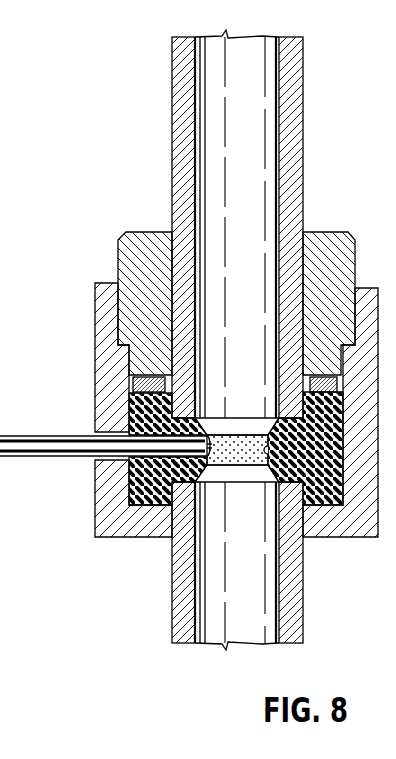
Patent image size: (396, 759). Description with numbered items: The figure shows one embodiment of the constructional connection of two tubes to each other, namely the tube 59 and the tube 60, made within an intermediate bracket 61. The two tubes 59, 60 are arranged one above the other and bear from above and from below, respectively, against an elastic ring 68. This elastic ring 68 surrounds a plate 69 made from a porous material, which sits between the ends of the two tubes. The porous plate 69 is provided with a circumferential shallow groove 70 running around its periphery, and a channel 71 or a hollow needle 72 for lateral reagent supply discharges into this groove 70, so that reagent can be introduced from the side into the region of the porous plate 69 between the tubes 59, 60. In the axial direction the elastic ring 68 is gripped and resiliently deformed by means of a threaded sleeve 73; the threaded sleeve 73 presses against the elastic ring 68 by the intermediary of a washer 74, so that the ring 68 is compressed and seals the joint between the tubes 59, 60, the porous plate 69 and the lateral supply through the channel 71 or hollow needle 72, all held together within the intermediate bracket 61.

The tube 59 is at (175, 99).
The tube 60 is at (183, 613).
The intermediate bracket 61 is at (345, 522).
The elastic ring 68 is at (153, 409).
The plate 69 is at (242, 443).
The circumferential shallow groove 70 is at (213, 455).
The channel 71 is at (140, 505).
The hollow needle 72 is at (45, 460).
The threaded sleeve 73 is at (143, 248).
The washer 74 is at (135, 384).